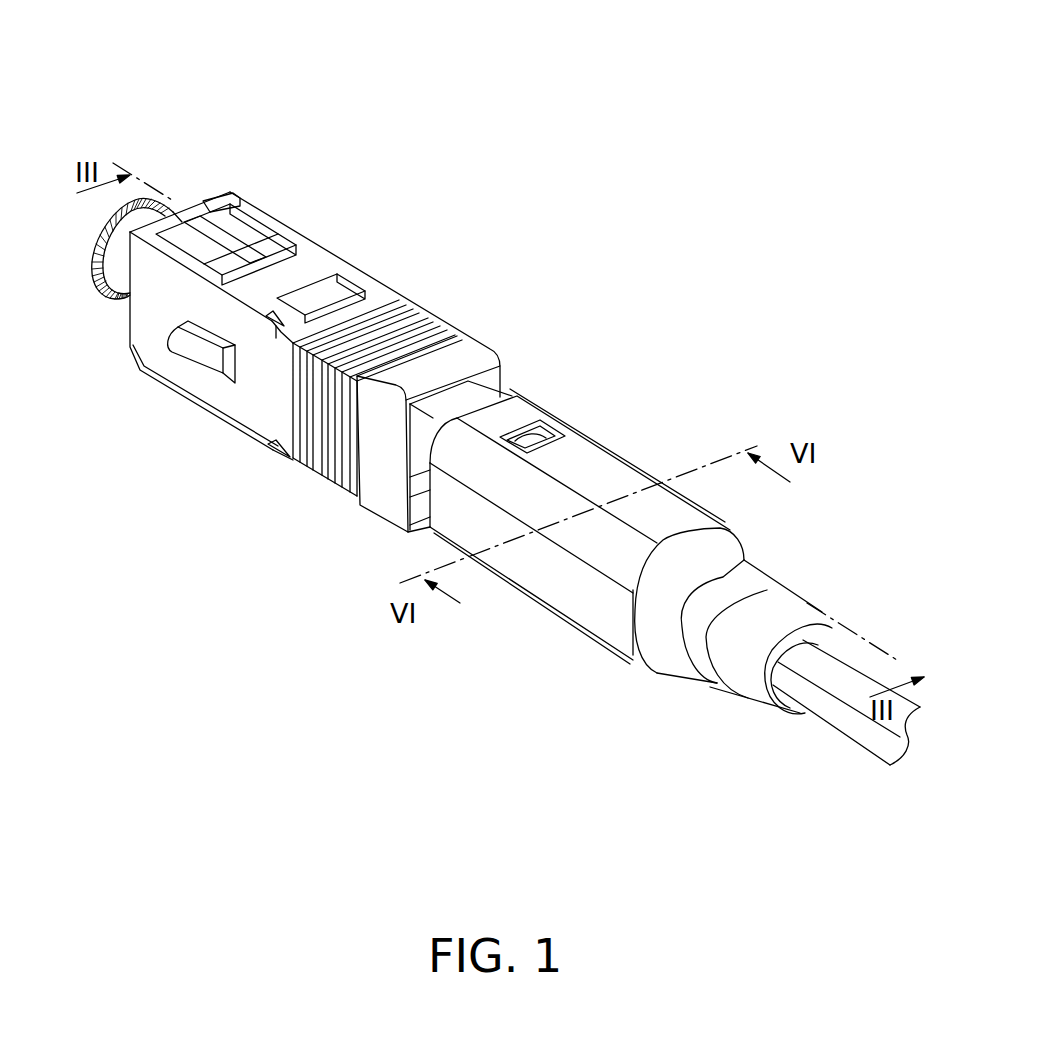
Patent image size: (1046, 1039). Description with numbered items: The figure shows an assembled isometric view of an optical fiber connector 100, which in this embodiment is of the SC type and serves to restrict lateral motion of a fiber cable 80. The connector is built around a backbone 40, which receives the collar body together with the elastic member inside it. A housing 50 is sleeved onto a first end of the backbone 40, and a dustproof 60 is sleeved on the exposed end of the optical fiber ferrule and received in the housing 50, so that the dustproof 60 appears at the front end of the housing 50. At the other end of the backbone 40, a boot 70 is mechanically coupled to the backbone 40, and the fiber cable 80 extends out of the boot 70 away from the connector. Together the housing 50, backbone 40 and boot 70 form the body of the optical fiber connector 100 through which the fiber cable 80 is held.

The optical fiber connector 100 is at (500, 80).
The backbone 40 is at (504, 380).
The housing 50 is at (318, 262).
The dustproof 60 is at (118, 296).
The boot 70 is at (607, 467).
The fiber cable 80 is at (830, 672).